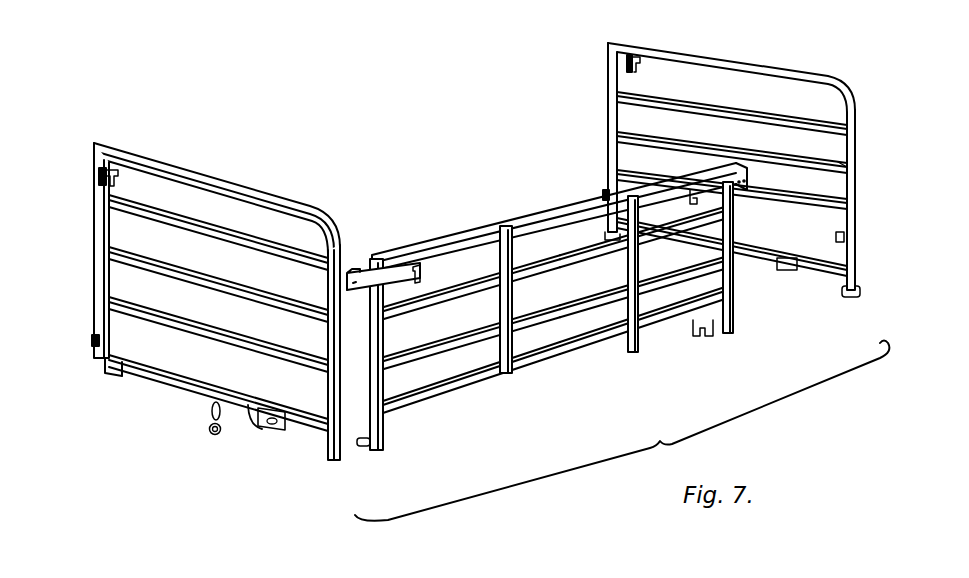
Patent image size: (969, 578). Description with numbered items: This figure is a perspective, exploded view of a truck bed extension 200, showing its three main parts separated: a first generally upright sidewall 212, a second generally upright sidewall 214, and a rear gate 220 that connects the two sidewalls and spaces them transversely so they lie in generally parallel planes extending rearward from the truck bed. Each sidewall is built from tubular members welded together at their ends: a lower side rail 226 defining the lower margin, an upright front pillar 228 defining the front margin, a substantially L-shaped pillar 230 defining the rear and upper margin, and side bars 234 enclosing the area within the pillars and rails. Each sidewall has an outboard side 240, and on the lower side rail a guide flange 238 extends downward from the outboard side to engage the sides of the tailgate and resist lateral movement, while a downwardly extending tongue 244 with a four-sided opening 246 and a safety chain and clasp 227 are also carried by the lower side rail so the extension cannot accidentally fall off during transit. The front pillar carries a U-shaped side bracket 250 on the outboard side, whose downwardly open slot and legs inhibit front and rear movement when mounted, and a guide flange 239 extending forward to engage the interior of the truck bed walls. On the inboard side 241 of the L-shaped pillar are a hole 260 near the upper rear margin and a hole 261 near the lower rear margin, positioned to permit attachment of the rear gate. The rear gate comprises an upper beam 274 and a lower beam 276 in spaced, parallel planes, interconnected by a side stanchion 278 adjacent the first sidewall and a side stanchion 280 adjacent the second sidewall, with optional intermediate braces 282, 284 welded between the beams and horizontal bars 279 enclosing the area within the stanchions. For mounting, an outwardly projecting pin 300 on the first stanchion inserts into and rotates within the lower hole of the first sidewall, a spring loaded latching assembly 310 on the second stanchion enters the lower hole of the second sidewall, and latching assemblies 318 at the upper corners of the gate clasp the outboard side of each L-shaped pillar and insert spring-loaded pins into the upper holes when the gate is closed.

The extension 200 is at (425, 120).
The first generally upright sidewall 212 is at (308, 190).
The second generally upright sidewall 214 is at (712, 40).
The rear gate 220 is at (498, 206).
The lower side rail 226 is at (155, 378).
The safety chain and clasp 227 is at (216, 440).
The upright front pillar 228 is at (96, 222).
The L-shaped pillar 230 is at (330, 329).
The side bars 234 is at (232, 292).
The guide flange 238 is at (108, 375).
The guide flange 239 is at (95, 340).
The outboard side 240 is at (98, 272).
The inboard side 241 is at (840, 240).
The tongue 244 is at (283, 433).
The four-sided opening 246 is at (248, 405).
The U-shaped side bracket 250 is at (97, 176).
The hole 260 is at (837, 163).
The hole 261 is at (848, 298).
The upper beam 274 is at (463, 237).
The lower beam 276 is at (440, 382).
The side stanchion 278 is at (385, 376).
The horizontal bars 279 is at (593, 262).
The side stanchion 280 is at (720, 295).
The intermediate brace 282 is at (508, 311).
The intermediate brace 284 is at (634, 259).
The outwardly projecting pin 300 is at (367, 447).
The spring loaded latching assembly 310 is at (733, 343).
The latching assemblies 318 is at (358, 252).